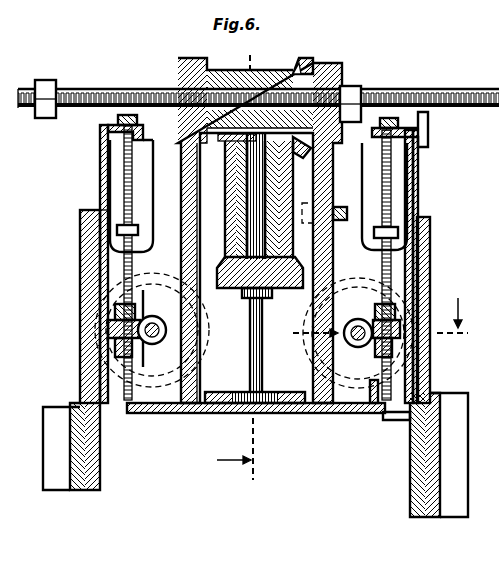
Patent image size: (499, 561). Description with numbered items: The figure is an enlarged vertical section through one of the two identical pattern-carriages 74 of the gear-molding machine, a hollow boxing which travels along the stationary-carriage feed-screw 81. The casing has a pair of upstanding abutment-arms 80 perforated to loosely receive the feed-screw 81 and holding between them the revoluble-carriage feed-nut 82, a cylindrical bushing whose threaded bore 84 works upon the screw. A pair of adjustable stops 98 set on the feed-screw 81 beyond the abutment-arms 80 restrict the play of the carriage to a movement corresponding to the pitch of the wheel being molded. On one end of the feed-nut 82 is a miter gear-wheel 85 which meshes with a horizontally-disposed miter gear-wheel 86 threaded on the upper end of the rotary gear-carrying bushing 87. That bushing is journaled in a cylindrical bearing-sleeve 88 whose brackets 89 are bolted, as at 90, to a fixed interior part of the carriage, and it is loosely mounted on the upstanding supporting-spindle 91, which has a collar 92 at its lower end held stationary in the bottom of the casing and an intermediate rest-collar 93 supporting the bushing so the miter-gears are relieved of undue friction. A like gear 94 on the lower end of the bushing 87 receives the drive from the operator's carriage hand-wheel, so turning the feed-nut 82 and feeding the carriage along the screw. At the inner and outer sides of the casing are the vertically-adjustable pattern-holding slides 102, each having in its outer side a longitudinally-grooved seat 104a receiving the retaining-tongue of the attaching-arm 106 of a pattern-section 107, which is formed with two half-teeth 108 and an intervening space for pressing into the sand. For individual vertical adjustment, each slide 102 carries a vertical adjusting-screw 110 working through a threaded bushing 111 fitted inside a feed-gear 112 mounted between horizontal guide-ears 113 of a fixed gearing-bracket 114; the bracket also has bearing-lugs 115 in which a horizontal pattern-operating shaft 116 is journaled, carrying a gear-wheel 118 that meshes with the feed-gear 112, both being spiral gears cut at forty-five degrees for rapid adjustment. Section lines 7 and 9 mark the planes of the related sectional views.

The section line 7 7 is at (237, 270).
The section line 9 9 is at (379, 321).
The pattern-carriage 74 is at (126, 168).
The abutment-arms 80 is at (178, 74).
The stationary-carriage feed-screw 81 is at (126, 89).
The revoluble-carriage feed-nut 82 is at (258, 80).
The threaded bore 84 is at (230, 78).
The miter gear-wheel 85 is at (305, 65).
The miter gear-wheel 86 is at (227, 147).
The rotary gear-carrying bushing 87 is at (183, 208).
The cylindrical bearing-sleeve 88 is at (198, 243).
The brackets 89 is at (290, 198).
The bolts 90 is at (342, 222).
The upstanding supporting-spindle 91 is at (250, 359).
The collar 92 is at (265, 390).
The rest-collar 93 is at (270, 293).
The gear 94 is at (226, 279).
The adjustable stops 98 is at (47, 78).
The pattern-holding slide 102 is at (100, 136).
The longitudinally-grooved seat 104a is at (418, 203).
The attaching-arm 106 is at (86, 276).
The pattern-section 107 is at (78, 493).
The half-teeth 108 is at (48, 449).
The adjusting-screw 110 is at (100, 187).
The threaded bushing 111 is at (368, 385).
The feed-gear 112 is at (108, 328).
The guide-ears 113 is at (110, 343).
The gearing-bracket 114 is at (98, 205).
The bearing-lugs 115 is at (170, 332).
The pattern-operating shaft 116 is at (133, 350).
The gear-wheel 118 is at (157, 317).